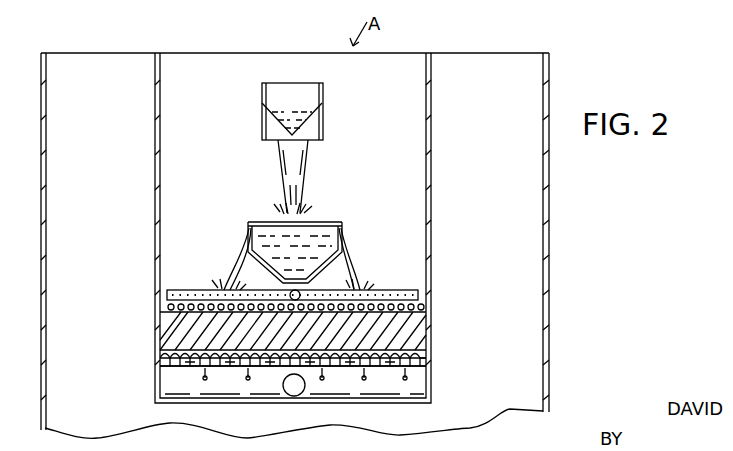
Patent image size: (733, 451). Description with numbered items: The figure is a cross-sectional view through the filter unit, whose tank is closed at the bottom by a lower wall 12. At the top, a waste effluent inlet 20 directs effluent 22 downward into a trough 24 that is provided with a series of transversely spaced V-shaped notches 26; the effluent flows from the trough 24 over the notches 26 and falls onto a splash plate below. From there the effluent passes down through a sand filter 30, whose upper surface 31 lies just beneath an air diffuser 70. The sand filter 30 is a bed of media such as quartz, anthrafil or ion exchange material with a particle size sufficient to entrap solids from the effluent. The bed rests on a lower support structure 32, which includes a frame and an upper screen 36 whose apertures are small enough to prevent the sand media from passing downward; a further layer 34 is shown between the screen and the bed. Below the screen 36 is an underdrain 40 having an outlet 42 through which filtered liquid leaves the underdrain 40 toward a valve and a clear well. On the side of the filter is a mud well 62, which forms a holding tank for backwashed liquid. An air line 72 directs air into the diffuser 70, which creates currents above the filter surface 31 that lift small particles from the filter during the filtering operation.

The lower wall 12 is at (375, 400).
The waste effluent inlet 20 is at (300, 122).
The effluent 22 is at (305, 178).
The trough 24 is at (333, 218).
The V-shaped notches 26 is at (248, 226).
The sand filter 30 is at (172, 333).
The upper surface 31 is at (420, 308).
The lower support structure 32 is at (228, 360).
The support screen 34 is at (190, 365).
The upper screen 36 is at (165, 360).
The underdrain 40 is at (268, 388).
The outlet 42 is at (300, 396).
The mud well 62 is at (549, 378).
The air diffuser 70 is at (198, 290).
The air line 72 is at (297, 301).